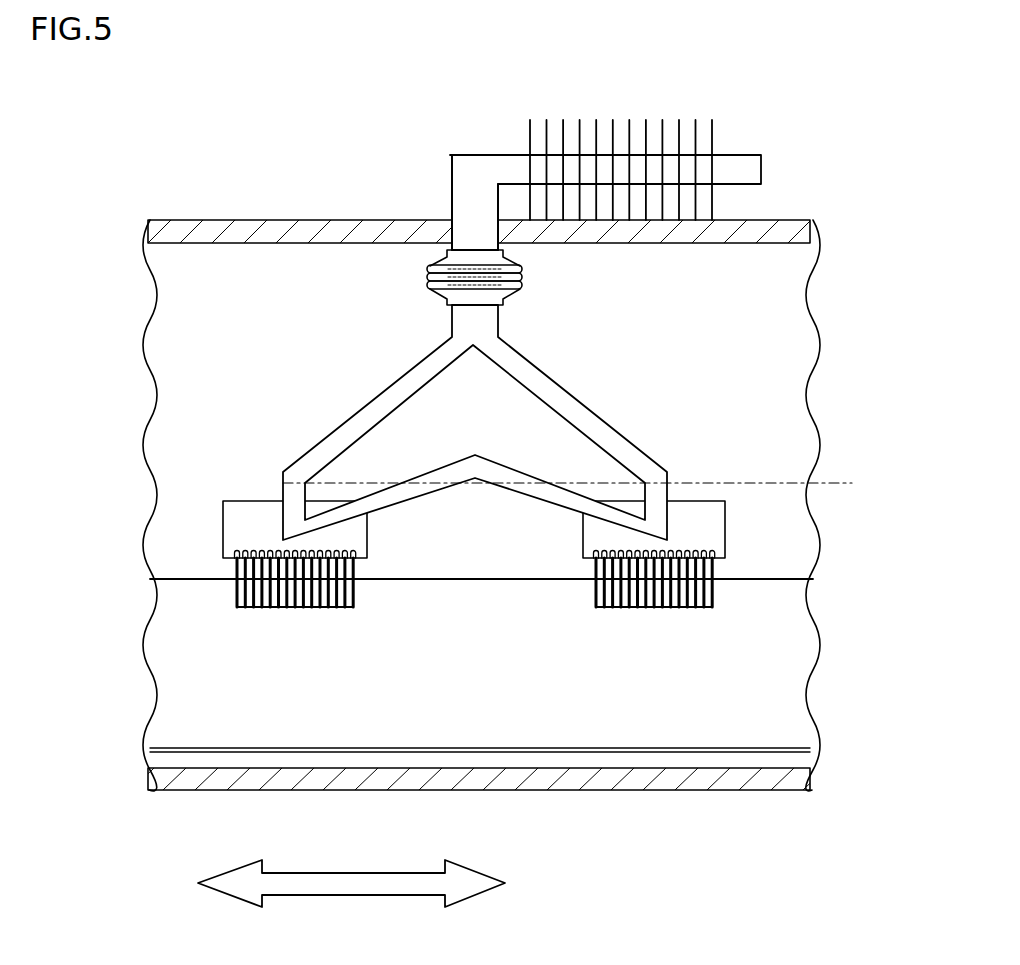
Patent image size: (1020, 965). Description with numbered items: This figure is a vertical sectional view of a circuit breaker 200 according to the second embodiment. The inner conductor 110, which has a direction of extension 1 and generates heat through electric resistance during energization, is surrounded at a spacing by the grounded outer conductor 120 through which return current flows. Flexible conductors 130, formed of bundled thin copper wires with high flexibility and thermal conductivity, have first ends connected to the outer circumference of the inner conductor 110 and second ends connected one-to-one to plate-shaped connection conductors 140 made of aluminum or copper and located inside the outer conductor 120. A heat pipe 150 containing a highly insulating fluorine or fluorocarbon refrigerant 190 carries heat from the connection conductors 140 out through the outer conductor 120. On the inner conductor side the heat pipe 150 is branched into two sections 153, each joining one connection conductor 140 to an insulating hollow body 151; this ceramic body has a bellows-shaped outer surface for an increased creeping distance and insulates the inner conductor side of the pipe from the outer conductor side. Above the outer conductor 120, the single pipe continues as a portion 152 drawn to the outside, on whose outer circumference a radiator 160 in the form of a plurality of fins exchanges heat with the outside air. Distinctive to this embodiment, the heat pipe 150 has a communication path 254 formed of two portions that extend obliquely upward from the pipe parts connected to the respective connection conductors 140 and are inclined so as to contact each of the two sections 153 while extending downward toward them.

The circuit breaker 200 is at (822, 87).
The inner conductor 110 is at (780, 672).
The outer conductor 120 is at (290, 218).
The flexible conductors 130 is at (712, 590).
The connection conductors 140 is at (725, 527).
The heat pipe 150 is at (747, 155).
The insulating hollow body 151 is at (432, 265).
The portion of heat pipe drawn to outside of outer conductor 152 is at (464, 143).
The sections 153 is at (360, 392).
The radiator 160 is at (530, 137).
The refrigerant 190 is at (588, 484).
The communication path 254 is at (504, 487).
The direction of extension 1 is at (490, 880).